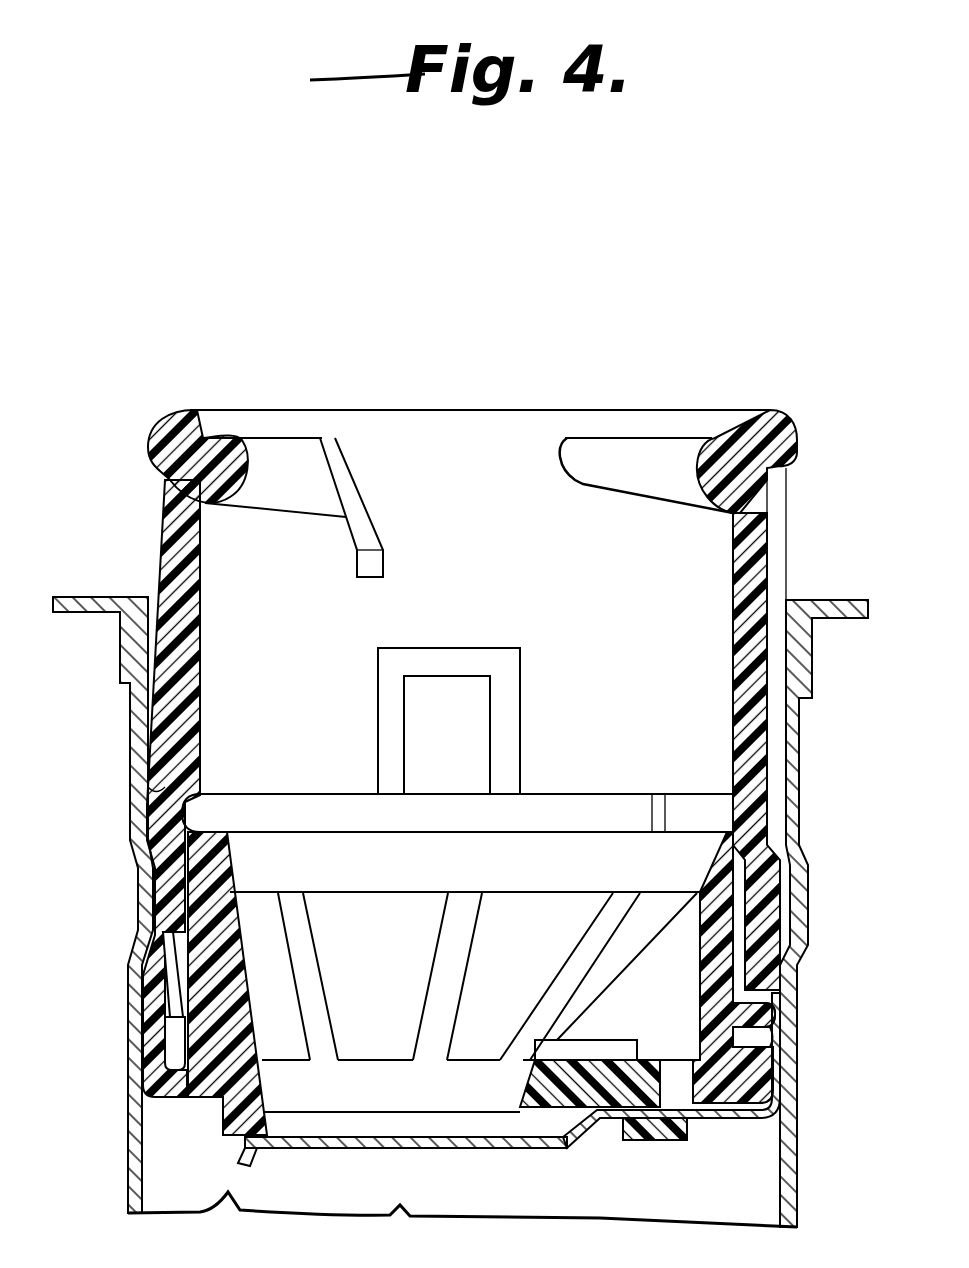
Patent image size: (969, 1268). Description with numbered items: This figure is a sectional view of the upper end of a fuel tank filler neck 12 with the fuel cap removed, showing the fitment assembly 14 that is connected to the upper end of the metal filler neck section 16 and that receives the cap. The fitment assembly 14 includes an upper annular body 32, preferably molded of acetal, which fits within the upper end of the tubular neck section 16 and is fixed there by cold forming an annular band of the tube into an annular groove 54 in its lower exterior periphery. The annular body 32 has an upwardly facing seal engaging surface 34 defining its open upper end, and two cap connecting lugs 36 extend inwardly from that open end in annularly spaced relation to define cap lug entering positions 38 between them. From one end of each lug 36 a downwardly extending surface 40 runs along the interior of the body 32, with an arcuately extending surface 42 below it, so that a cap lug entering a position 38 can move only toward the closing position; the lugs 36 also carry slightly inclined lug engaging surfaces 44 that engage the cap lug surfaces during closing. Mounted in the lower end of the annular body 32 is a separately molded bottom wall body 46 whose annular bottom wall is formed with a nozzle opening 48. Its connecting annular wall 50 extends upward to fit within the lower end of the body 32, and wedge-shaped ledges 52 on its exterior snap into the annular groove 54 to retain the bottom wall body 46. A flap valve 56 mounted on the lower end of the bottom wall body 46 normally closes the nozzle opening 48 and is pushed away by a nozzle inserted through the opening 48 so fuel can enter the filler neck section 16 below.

The fuel tank filler neck 12 is at (122, 722).
The fitment assembly 14 is at (788, 586).
The metal filler neck section 16 is at (130, 1137).
The upper annular body 32 is at (755, 727).
The seal engaging surface 34 is at (178, 410).
The cap connecting lugs 36 is at (250, 445).
The cap lug entering positions 38 is at (470, 450).
The downwardly extending surface 40 is at (368, 518).
The arcuately extending surface 42 is at (473, 648).
The lug engaging surfaces 44 is at (270, 513).
The bottom wall body 46 is at (590, 1112).
The nozzle opening 48 is at (522, 1103).
The connecting annular wall 50 is at (737, 940).
The wedge-shaped ledges 52 is at (183, 1038).
The annular groove 54 is at (185, 1015).
The flap valve 56 is at (323, 1140).